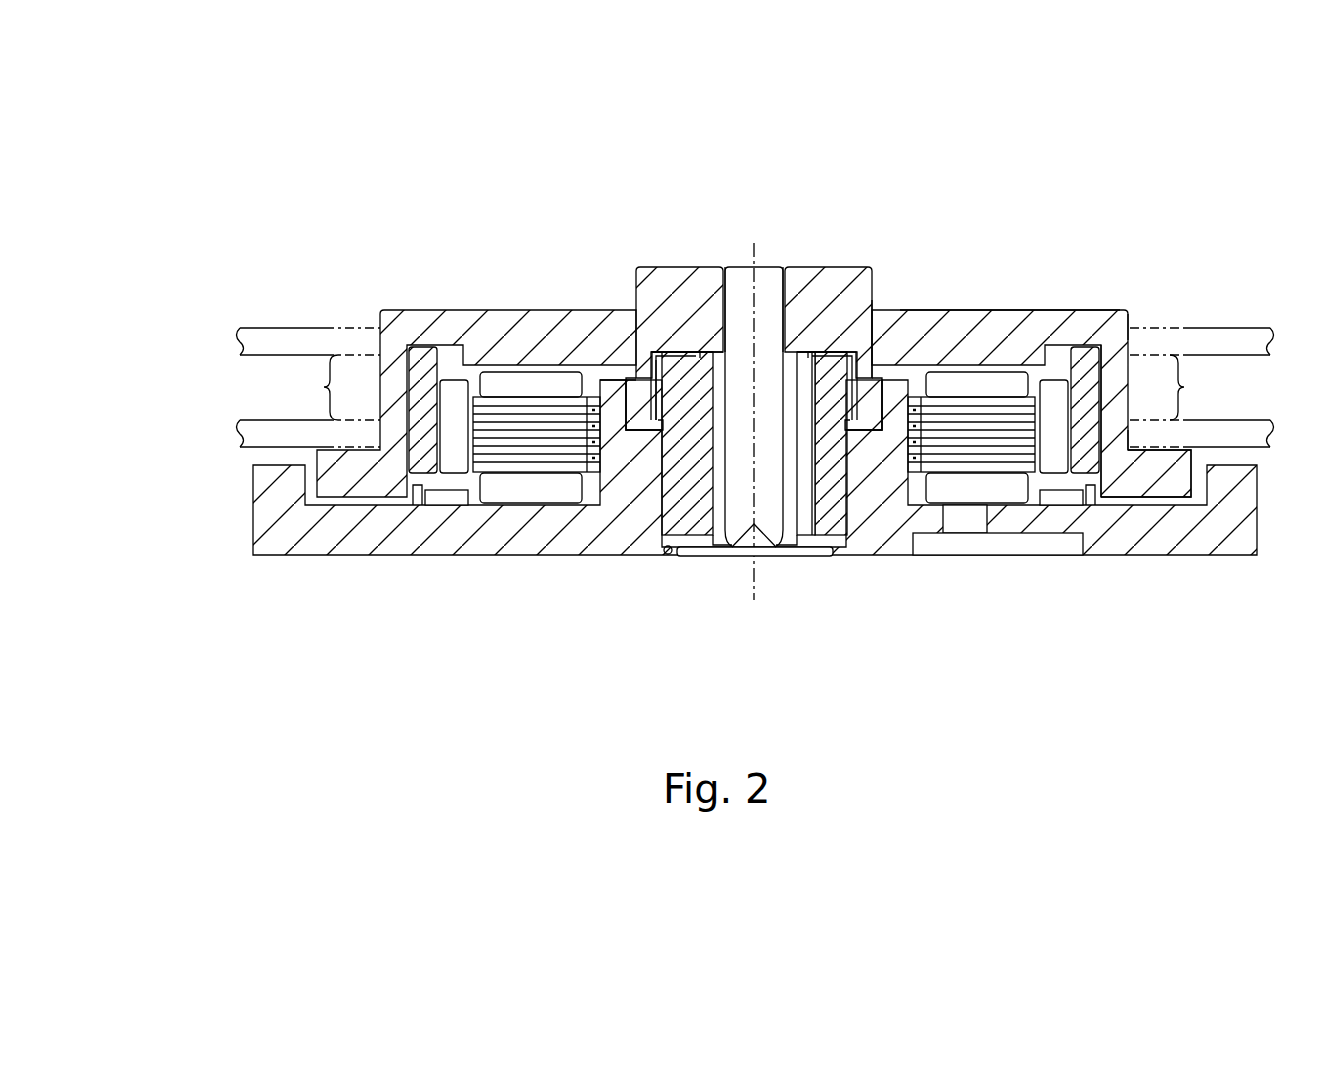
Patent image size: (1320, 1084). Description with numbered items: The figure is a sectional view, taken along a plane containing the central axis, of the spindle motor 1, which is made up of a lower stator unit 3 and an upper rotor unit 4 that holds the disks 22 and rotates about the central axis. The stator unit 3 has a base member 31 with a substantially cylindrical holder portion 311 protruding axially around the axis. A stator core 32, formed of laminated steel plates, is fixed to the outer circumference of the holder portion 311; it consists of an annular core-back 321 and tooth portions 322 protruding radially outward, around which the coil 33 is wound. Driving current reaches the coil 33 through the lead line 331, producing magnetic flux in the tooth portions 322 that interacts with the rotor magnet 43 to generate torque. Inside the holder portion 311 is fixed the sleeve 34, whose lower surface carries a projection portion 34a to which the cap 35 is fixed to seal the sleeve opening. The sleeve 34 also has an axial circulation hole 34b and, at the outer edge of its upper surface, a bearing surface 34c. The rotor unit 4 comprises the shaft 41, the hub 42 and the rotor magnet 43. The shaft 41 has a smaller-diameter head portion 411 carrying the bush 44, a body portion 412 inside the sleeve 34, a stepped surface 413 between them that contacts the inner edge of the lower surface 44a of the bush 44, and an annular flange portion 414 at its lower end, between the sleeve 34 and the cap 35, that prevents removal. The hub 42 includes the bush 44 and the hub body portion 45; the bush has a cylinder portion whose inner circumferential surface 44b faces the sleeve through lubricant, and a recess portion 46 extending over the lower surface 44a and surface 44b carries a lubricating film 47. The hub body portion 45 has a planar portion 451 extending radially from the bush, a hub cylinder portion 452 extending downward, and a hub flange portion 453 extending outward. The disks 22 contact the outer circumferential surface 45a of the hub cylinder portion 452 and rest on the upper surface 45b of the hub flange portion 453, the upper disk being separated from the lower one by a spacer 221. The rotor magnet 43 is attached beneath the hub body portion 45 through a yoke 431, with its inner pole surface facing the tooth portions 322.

The spindle motor 1 is at (485, 102).
The stator unit 3 is at (342, 582).
The rotor unit 4 is at (880, 190).
The disks 22 is at (273, 326).
The spacer 221 is at (327, 400).
The base member 31 is at (401, 556).
The holder portion 311 is at (613, 515).
The stator core 32 is at (580, 617).
The core-back 321 is at (593, 437).
The tooth portions 322 is at (523, 450).
The coil 33 is at (503, 383).
The lead line 331 is at (977, 547).
The sleeve 34 is at (700, 522).
The projection portion 34a is at (668, 556).
The circulation hole 34b is at (806, 456).
The bearing surface 34c is at (670, 338).
The cap 35 is at (820, 552).
The shaft 41 is at (771, 265).
The head portion 411 is at (831, 300).
The body portion 412 is at (874, 314).
The stepped surface 413 is at (754, 309).
The flange portion 414 is at (805, 542).
The hub 42 is at (1013, 168).
The rotor magnet 43 is at (452, 390).
The yoke 431 is at (418, 360).
The bush 44 is at (858, 265).
The lower surface 44a is at (681, 413).
The inner circumferential surface 44b is at (713, 423).
The hub body portion 45 is at (1021, 217).
The outer circumferential surface 45a is at (1145, 344).
The upper surface 45b is at (1183, 432).
The planar portion 451 is at (1023, 325).
The hub cylinder portion 452 is at (1103, 376).
The hub flange portion 453 is at (1170, 484).
The recess portion 46 is at (680, 345).
The lubricating film 47 is at (624, 376).